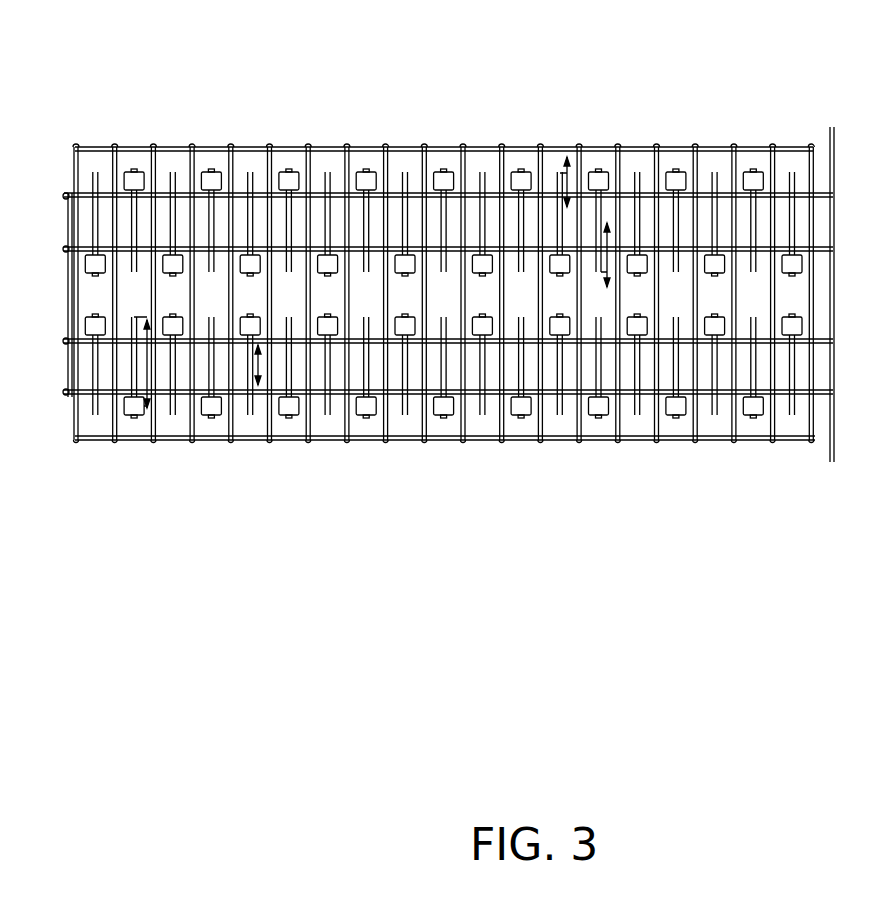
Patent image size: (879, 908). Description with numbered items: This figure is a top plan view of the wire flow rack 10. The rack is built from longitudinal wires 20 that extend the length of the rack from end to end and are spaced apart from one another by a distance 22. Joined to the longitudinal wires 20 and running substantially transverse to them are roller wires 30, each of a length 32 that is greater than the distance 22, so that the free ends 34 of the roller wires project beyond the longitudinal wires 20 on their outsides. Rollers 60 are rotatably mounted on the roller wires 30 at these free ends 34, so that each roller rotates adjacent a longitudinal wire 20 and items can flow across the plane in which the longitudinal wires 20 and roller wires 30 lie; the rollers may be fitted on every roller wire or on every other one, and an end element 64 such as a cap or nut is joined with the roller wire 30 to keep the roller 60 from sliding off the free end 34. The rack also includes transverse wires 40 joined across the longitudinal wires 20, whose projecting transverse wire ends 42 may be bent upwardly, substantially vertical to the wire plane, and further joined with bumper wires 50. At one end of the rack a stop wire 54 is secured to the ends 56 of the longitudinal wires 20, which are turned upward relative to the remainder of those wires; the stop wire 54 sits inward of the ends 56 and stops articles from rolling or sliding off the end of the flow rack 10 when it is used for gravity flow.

The flow rack 10 is at (141, 129).
The longitudinal wires 20 is at (493, 196).
The distance 22 is at (259, 365).
The roller wires 30 is at (743, 197).
The length 32 is at (147, 365).
The free ends 34 is at (620, 247).
The transverse wires 40 is at (613, 305).
The transverse wire end 42 is at (501, 146).
The bumper wires 50 is at (210, 147).
The stop wire 54 is at (64, 195).
The ends 56 is at (60, 200).
The rollers 60 is at (440, 177).
The end element 64 is at (482, 270).